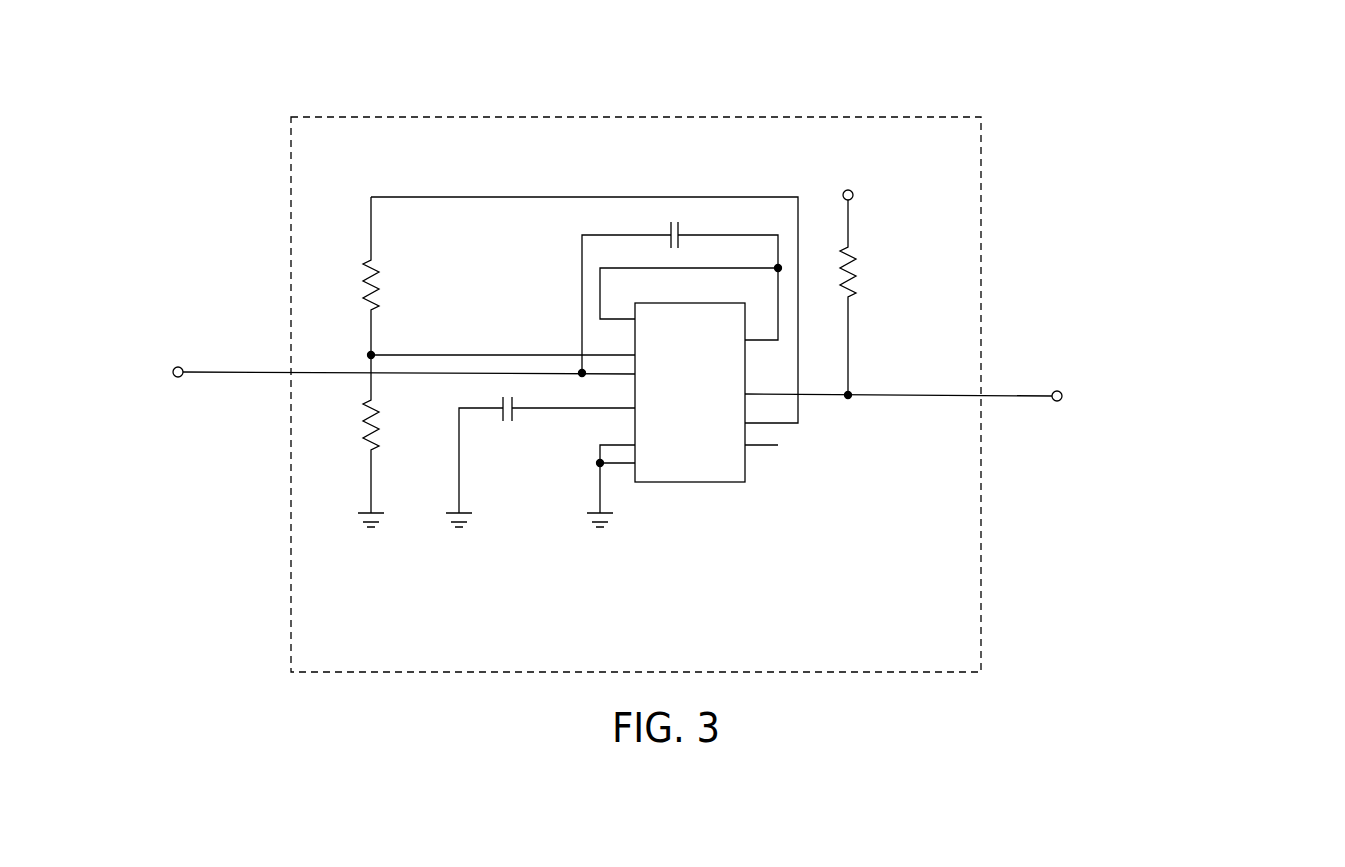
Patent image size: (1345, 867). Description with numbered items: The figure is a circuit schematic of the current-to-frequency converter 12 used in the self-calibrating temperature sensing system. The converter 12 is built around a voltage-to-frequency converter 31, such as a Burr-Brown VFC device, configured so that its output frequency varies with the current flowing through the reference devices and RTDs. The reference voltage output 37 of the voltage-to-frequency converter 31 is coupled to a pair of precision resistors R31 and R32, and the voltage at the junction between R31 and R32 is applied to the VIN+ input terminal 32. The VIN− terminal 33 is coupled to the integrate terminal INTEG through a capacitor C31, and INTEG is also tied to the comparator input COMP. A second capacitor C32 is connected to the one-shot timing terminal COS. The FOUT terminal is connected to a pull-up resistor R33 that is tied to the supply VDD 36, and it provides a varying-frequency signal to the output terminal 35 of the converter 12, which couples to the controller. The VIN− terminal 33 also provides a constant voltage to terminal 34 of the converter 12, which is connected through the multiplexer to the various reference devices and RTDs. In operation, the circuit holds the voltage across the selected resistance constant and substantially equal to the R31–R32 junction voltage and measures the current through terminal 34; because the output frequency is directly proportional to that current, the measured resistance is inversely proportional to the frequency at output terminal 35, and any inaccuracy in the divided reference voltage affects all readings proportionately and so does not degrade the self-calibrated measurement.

The current-to-frequency converter 12 is at (981, 159).
The voltage-to-frequency converter 31 is at (745, 465).
The VIN+ input terminal 32 is at (533, 356).
The VIN− terminal 33 is at (635, 381).
The terminal 34 is at (178, 366).
The output terminal 35 is at (1058, 391).
The VDD 36 is at (850, 177).
The reference voltage output 37 is at (584, 315).
The resistor R31 is at (398, 276).
The resistor R32 is at (396, 440).
The pull-up resistor R33 is at (875, 299).
The capacitor C31 is at (682, 288).
The capacitor C32 is at (540, 462).